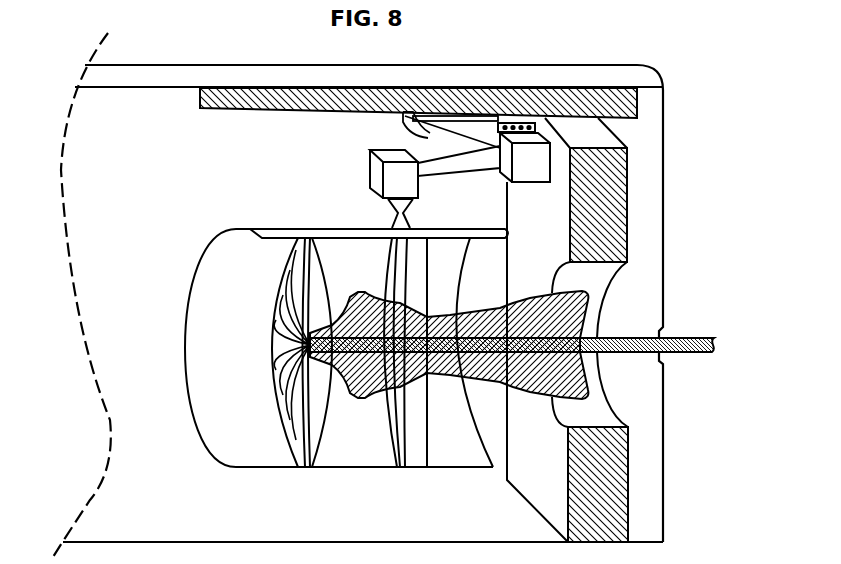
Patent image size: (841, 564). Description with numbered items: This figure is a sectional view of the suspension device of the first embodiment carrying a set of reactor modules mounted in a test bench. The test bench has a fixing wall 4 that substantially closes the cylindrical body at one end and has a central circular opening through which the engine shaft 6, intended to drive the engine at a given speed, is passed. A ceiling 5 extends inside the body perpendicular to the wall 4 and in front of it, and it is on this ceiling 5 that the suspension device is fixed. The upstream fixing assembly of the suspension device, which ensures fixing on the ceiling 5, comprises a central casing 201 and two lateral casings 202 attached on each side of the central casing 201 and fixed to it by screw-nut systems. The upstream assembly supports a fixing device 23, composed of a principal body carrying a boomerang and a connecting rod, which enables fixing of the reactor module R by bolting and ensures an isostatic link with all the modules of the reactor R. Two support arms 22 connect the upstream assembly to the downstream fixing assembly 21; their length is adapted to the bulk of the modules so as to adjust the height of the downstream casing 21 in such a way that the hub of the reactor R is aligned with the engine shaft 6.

The wall 4 is at (600, 205).
The ceiling 5 is at (473, 100).
The engine shaft 6 is at (690, 340).
The downstream fixing assembly 21 is at (400, 182).
The support arms 22 is at (440, 160).
The fixing device 23 is at (393, 213).
The central casing 201 is at (533, 163).
The lateral casings 202 is at (430, 137).
The reactor module R is at (275, 232).